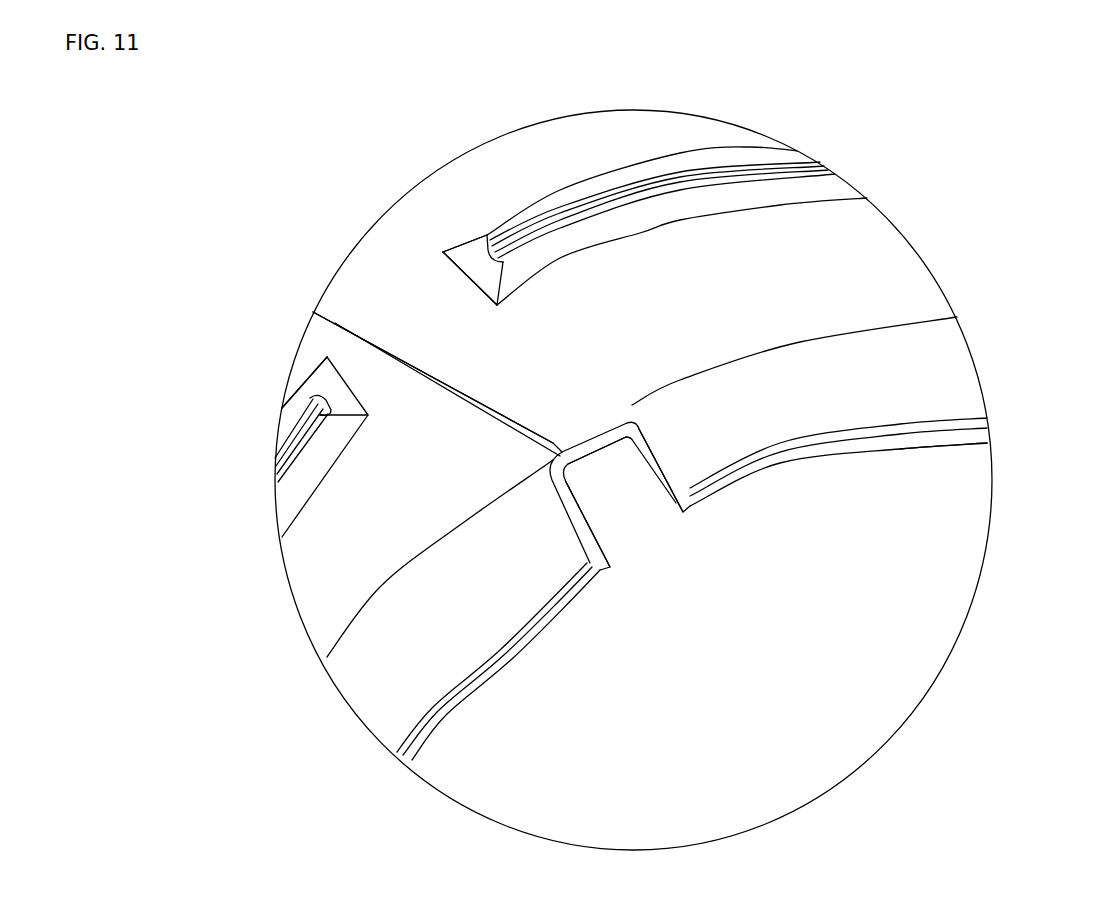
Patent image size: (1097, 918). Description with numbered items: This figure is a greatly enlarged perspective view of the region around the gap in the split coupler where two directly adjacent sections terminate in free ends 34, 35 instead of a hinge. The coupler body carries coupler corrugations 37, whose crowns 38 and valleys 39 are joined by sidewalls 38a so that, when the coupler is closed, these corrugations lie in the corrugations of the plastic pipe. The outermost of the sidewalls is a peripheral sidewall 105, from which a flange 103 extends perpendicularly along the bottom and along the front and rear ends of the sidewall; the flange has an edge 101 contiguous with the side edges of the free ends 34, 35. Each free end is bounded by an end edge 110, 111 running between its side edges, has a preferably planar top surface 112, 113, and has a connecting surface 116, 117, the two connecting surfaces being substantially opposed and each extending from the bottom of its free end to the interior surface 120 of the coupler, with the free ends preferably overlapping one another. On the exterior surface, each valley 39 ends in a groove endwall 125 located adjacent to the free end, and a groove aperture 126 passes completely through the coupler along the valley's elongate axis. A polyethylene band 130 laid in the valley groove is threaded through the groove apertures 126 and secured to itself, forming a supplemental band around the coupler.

The coupler corrugations 37 is at (922, 252).
The crowns 38 is at (788, 223).
The sidewalls 38a is at (728, 193).
The valleys 39 is at (752, 177).
The band 130 is at (812, 158).
The groove endwall 125 is at (455, 252).
The groove aperture 126 is at (483, 247).
The free end 35 is at (433, 297).
The top surface 113 is at (353, 303).
The end edge 111 is at (332, 315).
The top surface 112 is at (353, 358).
The end edge 110 is at (630, 423).
The free end 34 is at (643, 477).
The connecting surface 117 is at (595, 458).
The connecting surface 116 is at (612, 543).
The peripheral sidewall 105 is at (923, 362).
The edge 101 is at (693, 500).
The flange 103 is at (772, 455).
The interior surface 120 is at (930, 443).